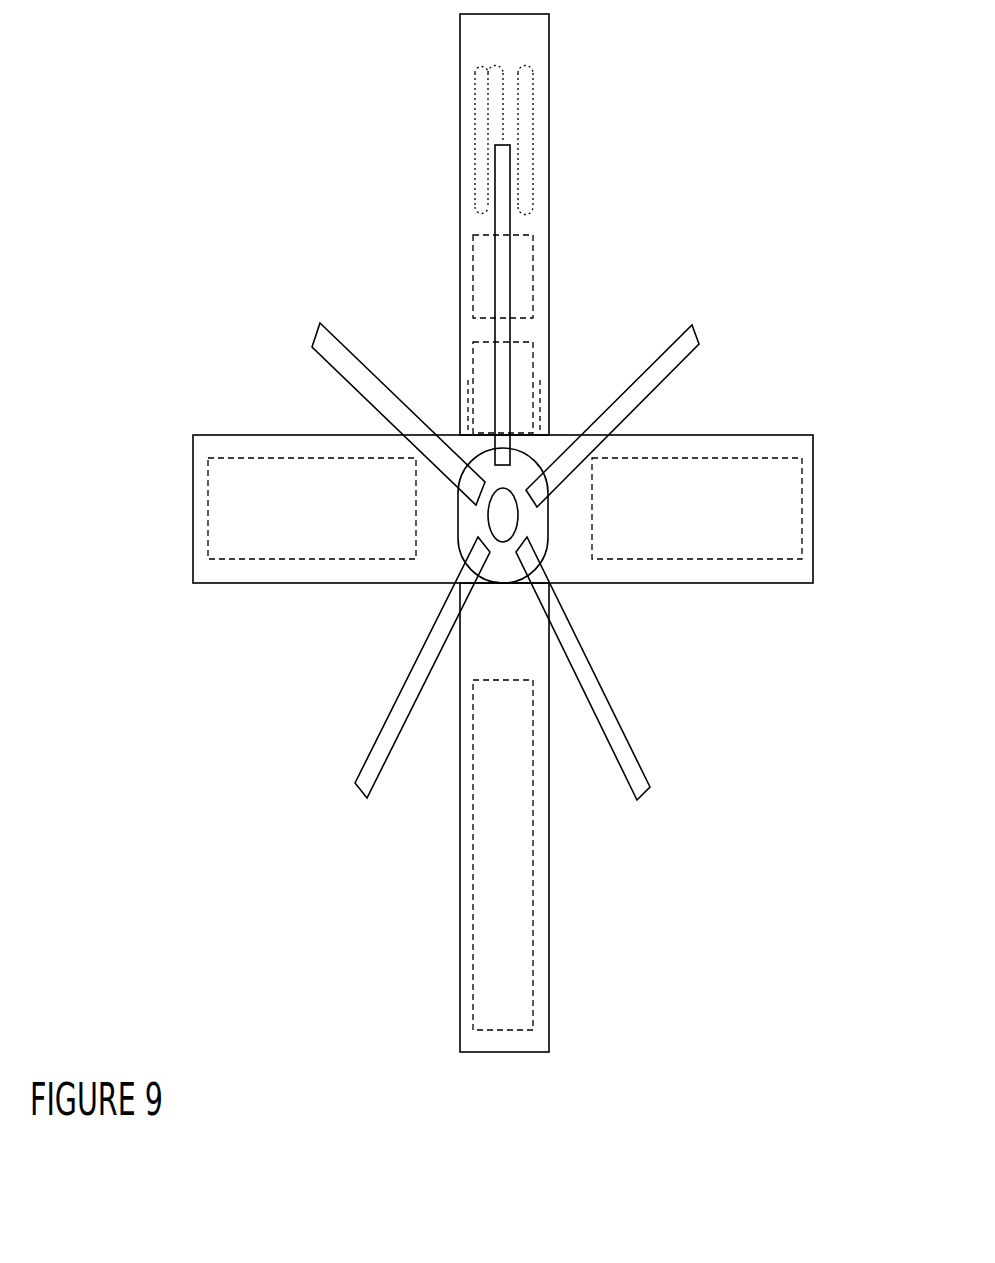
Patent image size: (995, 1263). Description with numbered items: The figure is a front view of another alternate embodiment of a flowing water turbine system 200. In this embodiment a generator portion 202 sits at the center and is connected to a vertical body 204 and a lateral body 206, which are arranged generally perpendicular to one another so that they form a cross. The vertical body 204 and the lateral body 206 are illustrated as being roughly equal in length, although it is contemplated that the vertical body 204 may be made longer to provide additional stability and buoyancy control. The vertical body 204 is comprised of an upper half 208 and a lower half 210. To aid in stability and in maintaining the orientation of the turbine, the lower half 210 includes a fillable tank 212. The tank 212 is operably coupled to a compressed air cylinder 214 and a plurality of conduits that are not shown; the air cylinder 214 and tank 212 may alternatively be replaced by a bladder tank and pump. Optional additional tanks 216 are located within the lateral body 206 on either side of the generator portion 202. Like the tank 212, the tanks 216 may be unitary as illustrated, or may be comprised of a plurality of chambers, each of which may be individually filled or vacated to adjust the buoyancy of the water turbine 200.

The flowing water turbine system 200 is at (214, 128).
The generator portion 202 is at (532, 460).
The vertical body 204 is at (548, 40).
The lateral body 206 is at (768, 435).
The upper half 208 is at (460, 293).
The lower half 210 is at (460, 877).
The fillable tank 212 is at (530, 937).
The compressed air cylinder 214 is at (533, 145).
The additional tanks 216 is at (310, 556).